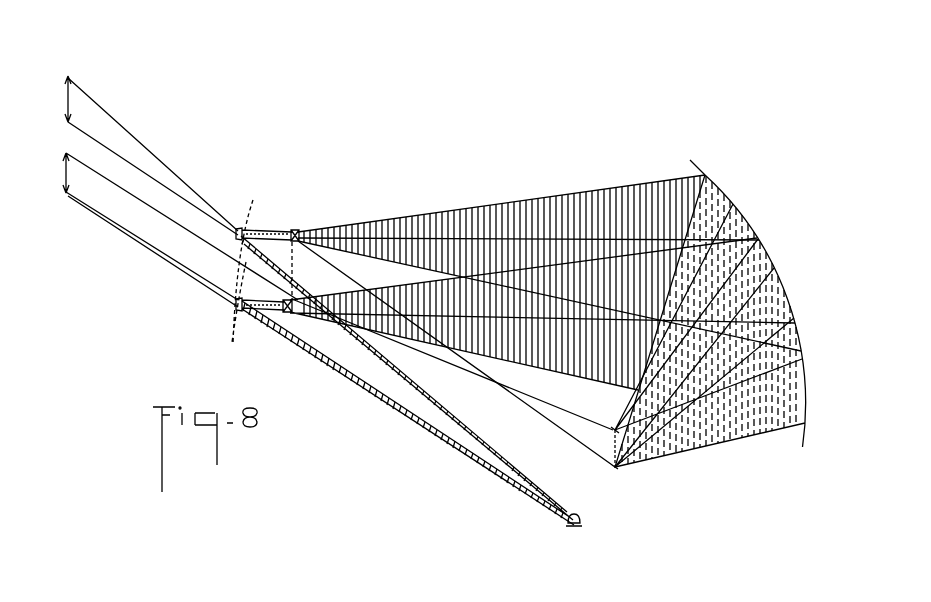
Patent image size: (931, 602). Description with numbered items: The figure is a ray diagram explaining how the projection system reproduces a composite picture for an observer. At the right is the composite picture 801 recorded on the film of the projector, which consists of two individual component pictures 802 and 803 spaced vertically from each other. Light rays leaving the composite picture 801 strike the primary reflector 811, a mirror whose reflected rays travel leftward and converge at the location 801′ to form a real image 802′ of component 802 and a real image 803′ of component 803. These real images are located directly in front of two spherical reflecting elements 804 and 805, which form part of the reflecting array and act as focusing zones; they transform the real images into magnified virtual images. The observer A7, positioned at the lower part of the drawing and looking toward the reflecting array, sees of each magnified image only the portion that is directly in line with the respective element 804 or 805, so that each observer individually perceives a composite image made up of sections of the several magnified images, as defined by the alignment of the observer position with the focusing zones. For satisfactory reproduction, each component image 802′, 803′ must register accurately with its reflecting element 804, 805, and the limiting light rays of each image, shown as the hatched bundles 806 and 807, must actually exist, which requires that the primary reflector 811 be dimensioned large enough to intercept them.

The spherical reflecting element 804 is at (238, 228).
The real image 802′ is at (300, 231).
The convergence location 801′ is at (293, 256).
The spherical reflecting element 805 is at (236, 306).
The real image 803′ is at (285, 314).
The limiting light ray 806 is at (400, 262).
The limiting light ray 807 is at (455, 212).
The primary reflector 811 is at (740, 208).
The component picture 803 is at (613, 432).
The composite picture 801 is at (613, 449).
The component picture 802 is at (615, 469).
The observer A7 is at (575, 528).